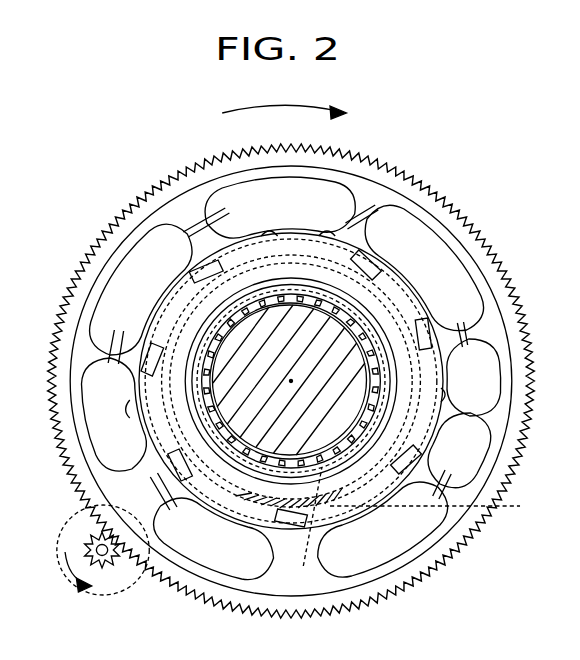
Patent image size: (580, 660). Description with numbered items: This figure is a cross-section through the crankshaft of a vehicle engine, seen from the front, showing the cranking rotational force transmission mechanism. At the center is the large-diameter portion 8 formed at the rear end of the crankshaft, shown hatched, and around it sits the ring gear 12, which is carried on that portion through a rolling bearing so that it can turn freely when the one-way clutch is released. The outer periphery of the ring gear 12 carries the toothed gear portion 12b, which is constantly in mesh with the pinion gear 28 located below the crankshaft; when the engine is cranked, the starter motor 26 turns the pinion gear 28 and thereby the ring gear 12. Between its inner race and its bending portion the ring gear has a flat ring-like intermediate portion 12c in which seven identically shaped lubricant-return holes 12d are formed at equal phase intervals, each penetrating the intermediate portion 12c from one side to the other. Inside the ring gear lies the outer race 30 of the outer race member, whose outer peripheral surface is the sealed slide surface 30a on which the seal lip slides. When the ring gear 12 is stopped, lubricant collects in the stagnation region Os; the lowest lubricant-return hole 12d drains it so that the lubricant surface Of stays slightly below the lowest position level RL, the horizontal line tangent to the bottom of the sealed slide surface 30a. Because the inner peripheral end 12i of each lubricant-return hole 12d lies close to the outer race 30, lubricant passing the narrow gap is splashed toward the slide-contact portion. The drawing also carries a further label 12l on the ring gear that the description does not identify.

The ring gear 12 is at (376, 166).
The gear portion 12b is at (417, 182).
The inner peripheral end 12i is at (420, 300).
The lobe / projection of ring gear carrier 12l is at (163, 298).
The lubricant-return hole 12d is at (277, 216).
The intermediate portion 12c is at (375, 505).
The large-diameter portion 8 is at (272, 328).
The outer race 30 is at (340, 445).
The sealed slide surface 30a is at (346, 518).
The lubricant surface Of is at (301, 456).
The stagnation region Os is at (305, 531).
The lowest position level RL is at (440, 509).
The starter motor 26 is at (68, 530).
The pinion gear 28 is at (124, 575).